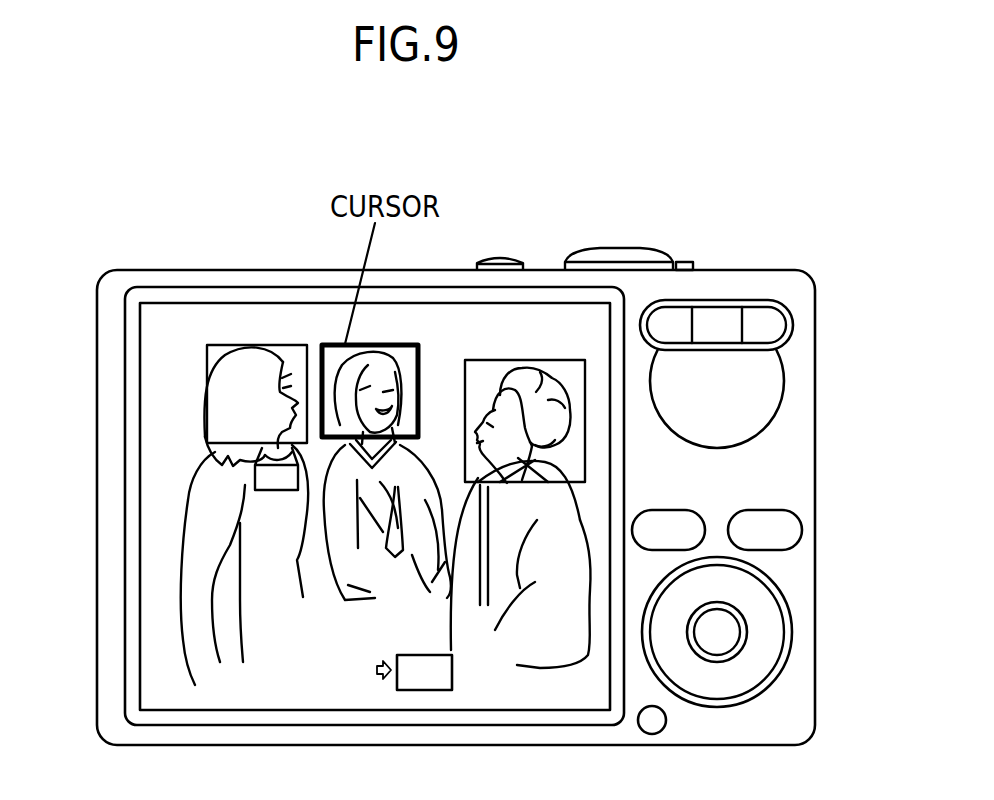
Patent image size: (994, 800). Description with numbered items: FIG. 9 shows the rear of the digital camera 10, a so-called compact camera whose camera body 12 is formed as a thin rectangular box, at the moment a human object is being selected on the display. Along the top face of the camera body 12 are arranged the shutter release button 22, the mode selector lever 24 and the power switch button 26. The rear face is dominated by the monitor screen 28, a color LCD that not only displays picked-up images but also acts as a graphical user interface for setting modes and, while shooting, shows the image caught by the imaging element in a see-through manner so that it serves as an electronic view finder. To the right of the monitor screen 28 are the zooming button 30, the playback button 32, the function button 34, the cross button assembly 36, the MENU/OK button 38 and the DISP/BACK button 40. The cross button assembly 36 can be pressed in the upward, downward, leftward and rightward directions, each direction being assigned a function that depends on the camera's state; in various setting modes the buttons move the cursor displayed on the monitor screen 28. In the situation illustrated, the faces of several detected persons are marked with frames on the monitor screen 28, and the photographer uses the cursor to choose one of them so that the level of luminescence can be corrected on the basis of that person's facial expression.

The digital camera 10 is at (196, 248).
The camera body 12 is at (282, 278).
The shutter release button 22 is at (612, 249).
The mode selector lever 24 is at (684, 265).
The power switch button 26 is at (500, 262).
The monitor screen 28 is at (150, 362).
The zooming button 30 is at (774, 323).
The playback button 32 is at (676, 518).
The function button 34 is at (776, 518).
The cross button assembly 36 is at (763, 635).
The MENU/OK button 38 is at (722, 625).
The DISP/BACK button 40 is at (667, 720).